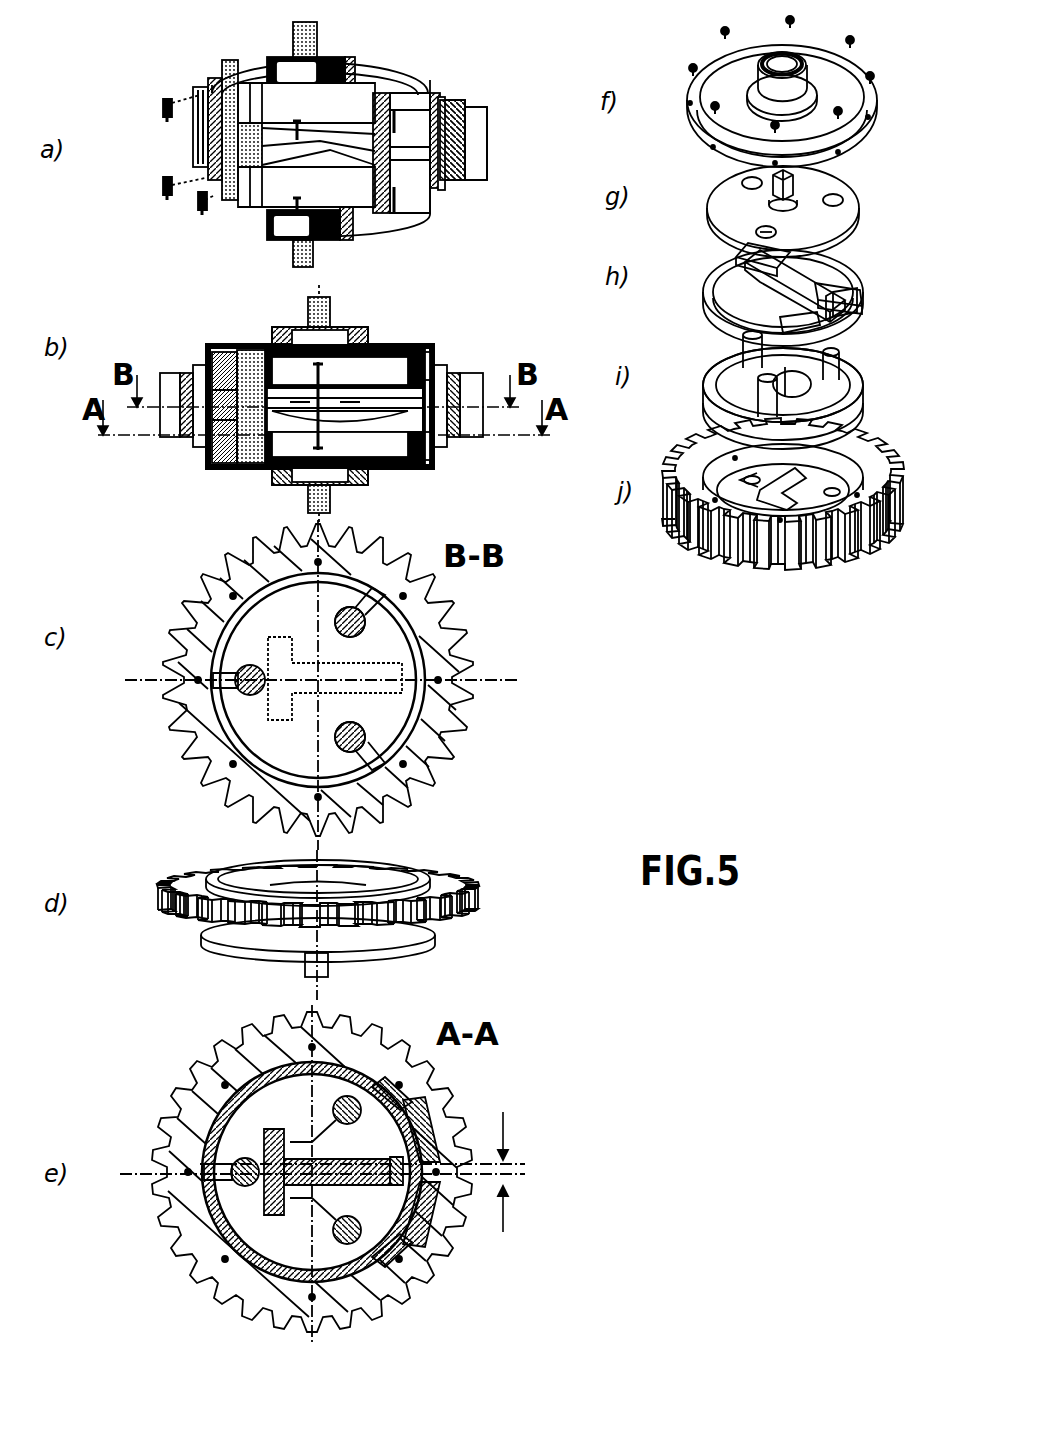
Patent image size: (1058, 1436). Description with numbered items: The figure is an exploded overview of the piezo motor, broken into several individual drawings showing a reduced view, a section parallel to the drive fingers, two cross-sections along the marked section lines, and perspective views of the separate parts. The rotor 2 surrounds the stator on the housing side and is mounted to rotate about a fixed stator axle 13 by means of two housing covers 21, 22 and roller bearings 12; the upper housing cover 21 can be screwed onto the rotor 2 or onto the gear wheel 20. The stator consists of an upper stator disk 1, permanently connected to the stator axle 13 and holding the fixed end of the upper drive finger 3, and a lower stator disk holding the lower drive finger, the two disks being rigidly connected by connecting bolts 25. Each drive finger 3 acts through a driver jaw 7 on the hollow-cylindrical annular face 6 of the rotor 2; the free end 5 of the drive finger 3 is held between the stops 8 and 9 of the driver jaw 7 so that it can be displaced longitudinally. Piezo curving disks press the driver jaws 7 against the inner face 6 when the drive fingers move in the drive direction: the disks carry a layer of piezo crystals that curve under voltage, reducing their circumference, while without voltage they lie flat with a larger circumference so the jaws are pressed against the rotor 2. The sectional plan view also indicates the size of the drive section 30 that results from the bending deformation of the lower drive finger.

The upper stator disk 1 is at (272, 338).
The rotor 2 is at (450, 105).
The drive finger 3 is at (750, 292).
The free end 5 is at (858, 314).
The hollow-cylindrical annular face 6 is at (700, 428).
The driver jaw 7 is at (415, 132).
The stop 8 is at (420, 1198).
The stop 9 is at (425, 1150).
The roller bearings 12 is at (250, 68).
The stator axle 13 is at (300, 47).
The gear wheel 20 is at (480, 112).
The upper housing cover 21 is at (376, 63).
The housing cover 22 is at (410, 220).
The bolts 25 is at (240, 350).
The drive section 30 is at (515, 1165).